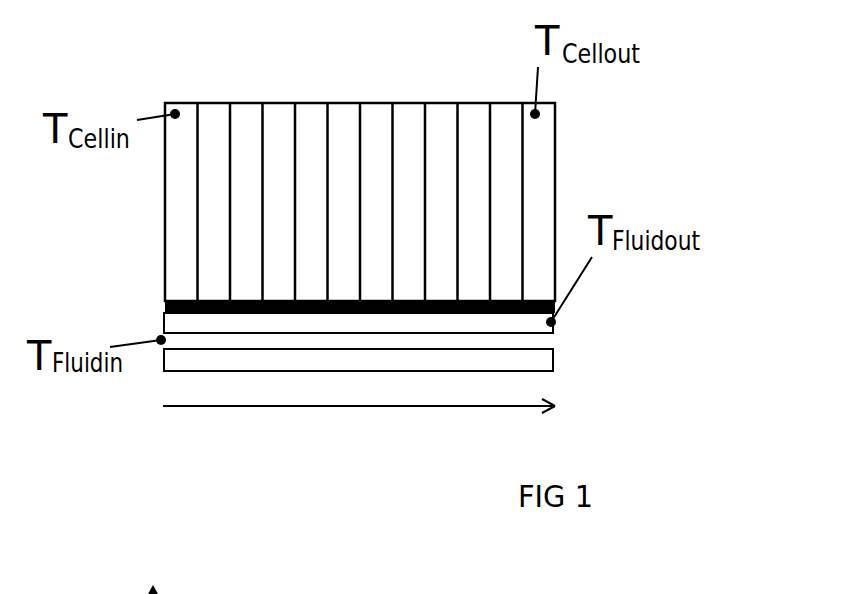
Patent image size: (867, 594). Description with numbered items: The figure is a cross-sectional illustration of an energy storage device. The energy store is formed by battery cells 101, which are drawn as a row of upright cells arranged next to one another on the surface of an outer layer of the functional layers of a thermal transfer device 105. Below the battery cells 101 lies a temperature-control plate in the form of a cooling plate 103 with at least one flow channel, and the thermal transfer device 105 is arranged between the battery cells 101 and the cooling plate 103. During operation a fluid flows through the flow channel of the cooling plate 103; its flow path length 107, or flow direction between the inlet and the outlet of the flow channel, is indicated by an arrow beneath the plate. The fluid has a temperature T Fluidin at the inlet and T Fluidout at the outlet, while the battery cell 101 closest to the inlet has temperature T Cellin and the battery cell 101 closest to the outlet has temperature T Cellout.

The battery cells 101 is at (523, 153).
The cooling plate 103 is at (567, 318).
The thermal transfer device 105 is at (155, 298).
The flow path length 107 is at (359, 426).